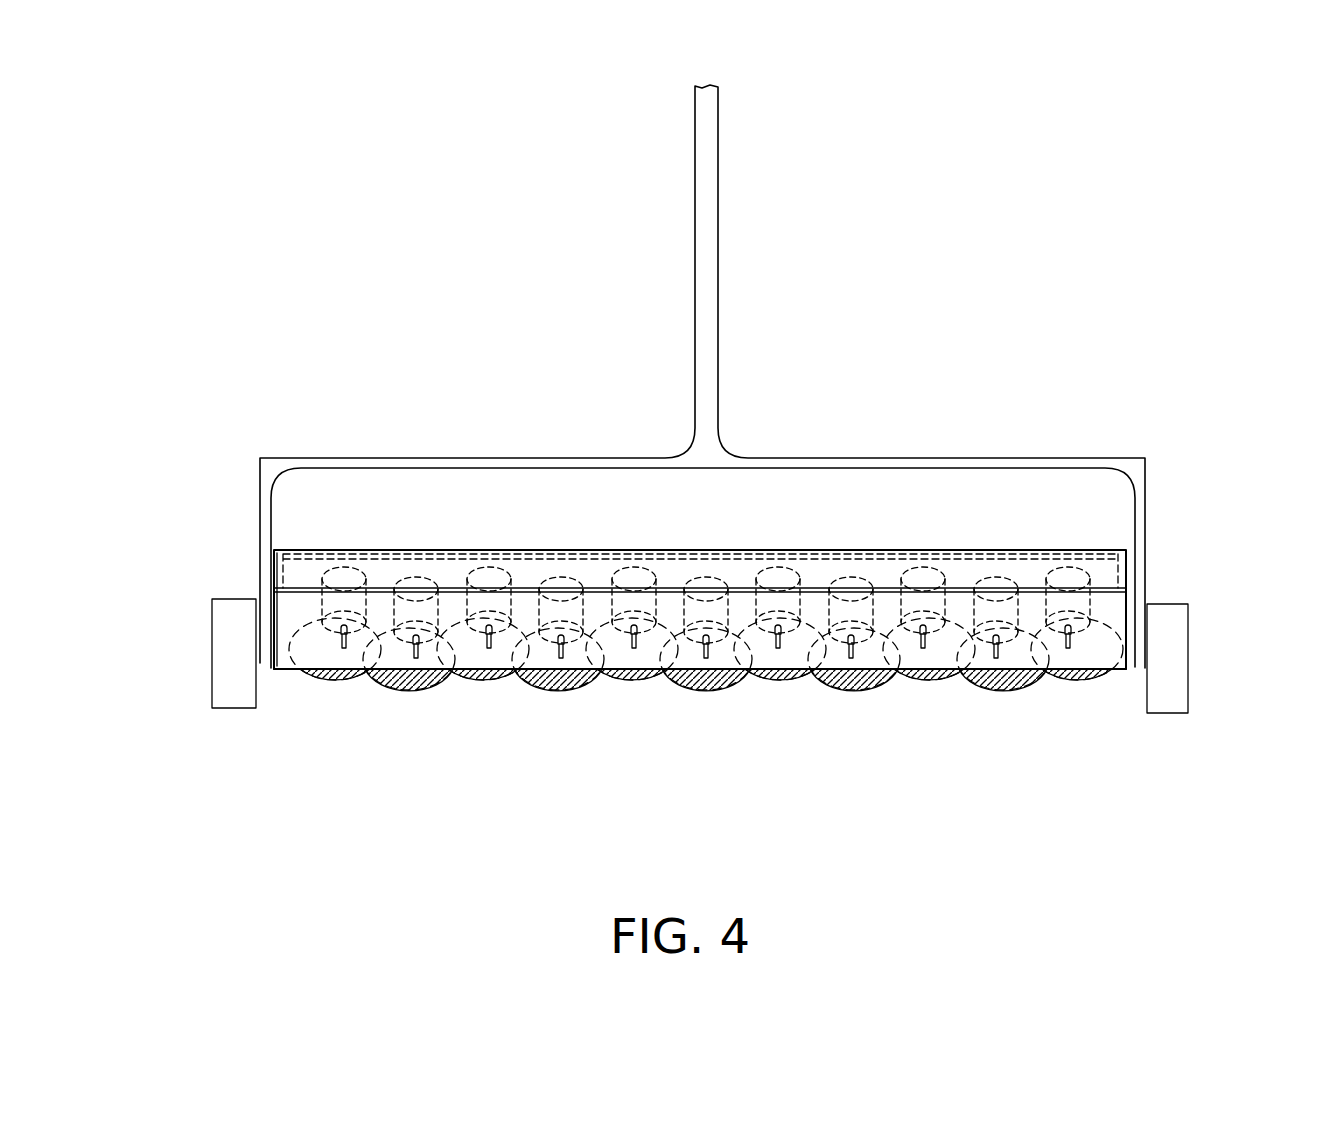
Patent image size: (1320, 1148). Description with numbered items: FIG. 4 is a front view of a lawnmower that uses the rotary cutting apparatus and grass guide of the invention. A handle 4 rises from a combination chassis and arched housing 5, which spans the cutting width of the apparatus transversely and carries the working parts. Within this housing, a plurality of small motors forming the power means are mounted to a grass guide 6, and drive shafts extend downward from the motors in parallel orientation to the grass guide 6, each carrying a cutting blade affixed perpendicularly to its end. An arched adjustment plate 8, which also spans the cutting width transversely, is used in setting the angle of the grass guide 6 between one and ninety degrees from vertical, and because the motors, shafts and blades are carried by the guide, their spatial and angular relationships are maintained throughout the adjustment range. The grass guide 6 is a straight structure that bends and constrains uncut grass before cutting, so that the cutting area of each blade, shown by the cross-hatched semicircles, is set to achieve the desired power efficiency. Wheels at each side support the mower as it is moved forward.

The handle 4 is at (718, 240).
The combination chassis and arched housing 5 is at (322, 550).
The grass guide 6 is at (286, 672).
The arched adjustment plate 8 is at (296, 556).